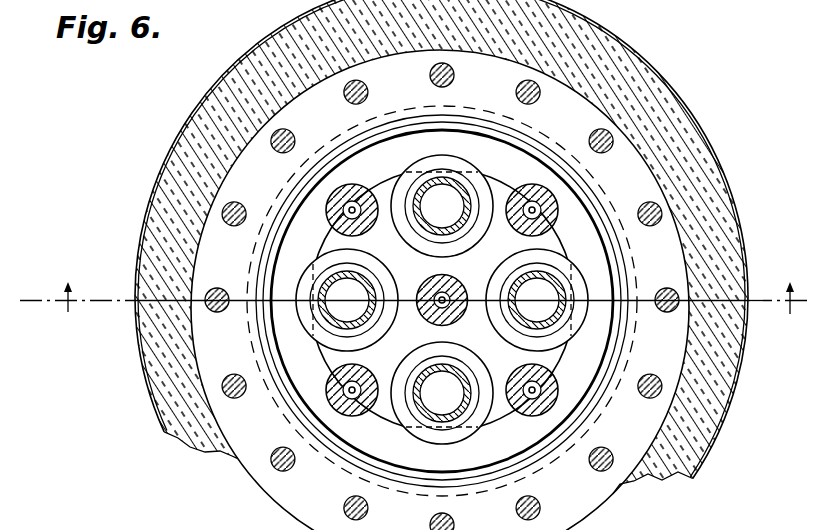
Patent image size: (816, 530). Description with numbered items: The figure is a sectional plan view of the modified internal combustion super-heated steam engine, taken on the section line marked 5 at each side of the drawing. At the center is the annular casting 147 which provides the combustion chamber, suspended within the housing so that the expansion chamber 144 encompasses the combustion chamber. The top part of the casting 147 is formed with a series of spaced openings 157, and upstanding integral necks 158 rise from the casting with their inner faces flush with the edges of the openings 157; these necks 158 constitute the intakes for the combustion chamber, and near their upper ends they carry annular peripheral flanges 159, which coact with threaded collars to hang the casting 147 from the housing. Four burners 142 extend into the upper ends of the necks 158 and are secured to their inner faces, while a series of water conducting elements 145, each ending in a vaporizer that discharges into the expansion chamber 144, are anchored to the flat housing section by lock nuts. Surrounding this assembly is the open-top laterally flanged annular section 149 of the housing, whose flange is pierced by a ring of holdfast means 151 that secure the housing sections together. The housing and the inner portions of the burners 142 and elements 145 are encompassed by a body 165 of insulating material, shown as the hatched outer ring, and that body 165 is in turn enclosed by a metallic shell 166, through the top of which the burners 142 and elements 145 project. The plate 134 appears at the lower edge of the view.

The section line 5- 5 is at (415, 298).
The flange plate 134 is at (440, 290).
The burners 142 is at (429, 228).
The expansion chamber 144 is at (591, 377).
The water conducting elements 145 is at (446, 296).
The casting 147 is at (333, 235).
The annular section 149 is at (612, 253).
The holdfast means 151 is at (215, 289).
The openings 157 is at (530, 308).
The necks 158 is at (320, 310).
The annular peripheral flanges 159 is at (314, 323).
The body of insulating material 165 is at (193, 164).
The metallic shell 166 is at (194, 110).